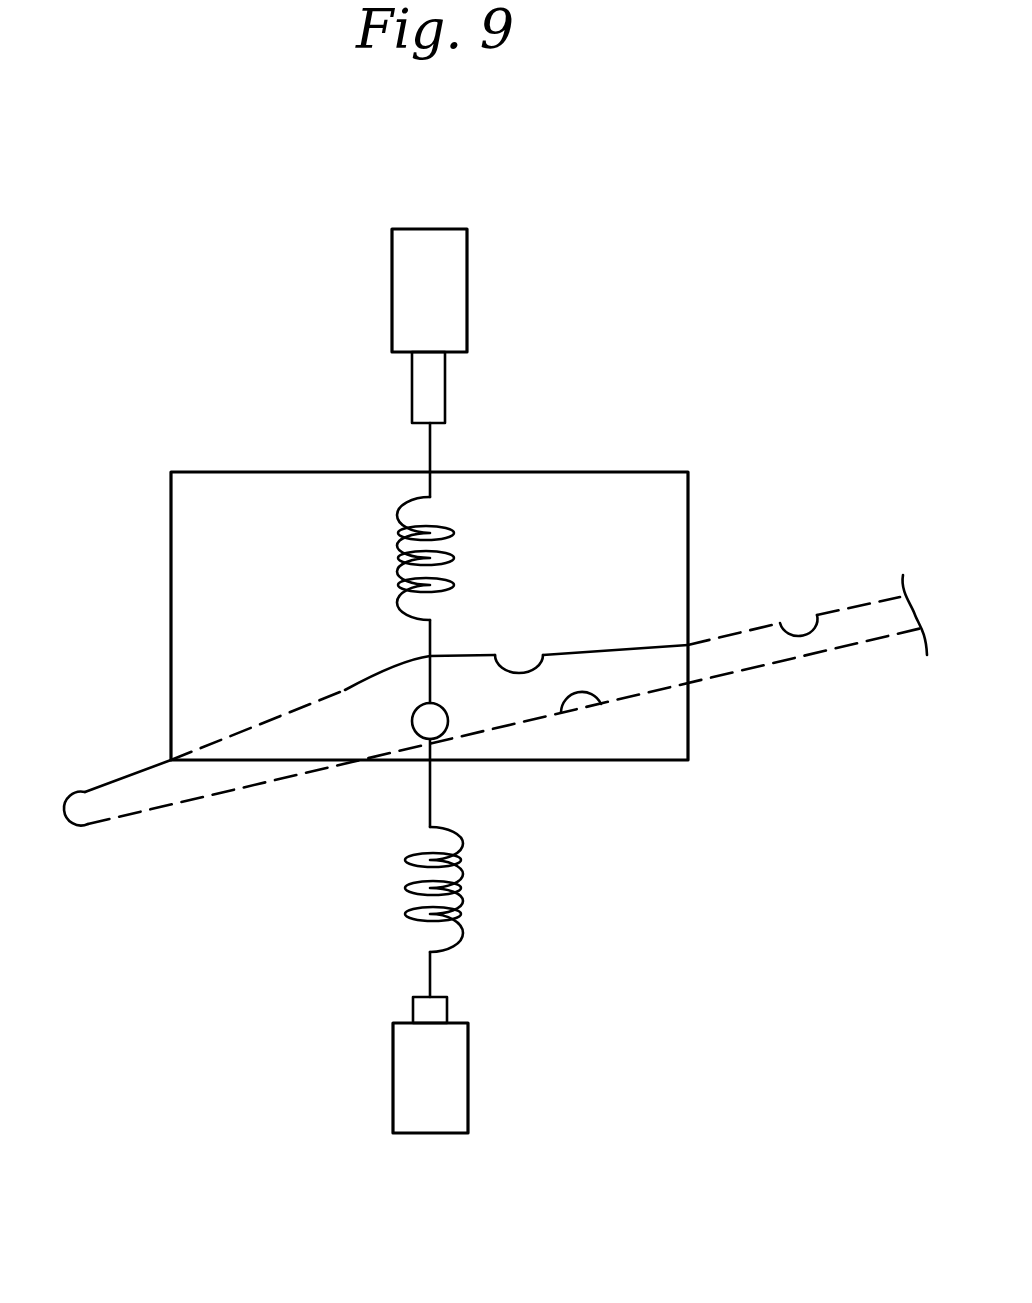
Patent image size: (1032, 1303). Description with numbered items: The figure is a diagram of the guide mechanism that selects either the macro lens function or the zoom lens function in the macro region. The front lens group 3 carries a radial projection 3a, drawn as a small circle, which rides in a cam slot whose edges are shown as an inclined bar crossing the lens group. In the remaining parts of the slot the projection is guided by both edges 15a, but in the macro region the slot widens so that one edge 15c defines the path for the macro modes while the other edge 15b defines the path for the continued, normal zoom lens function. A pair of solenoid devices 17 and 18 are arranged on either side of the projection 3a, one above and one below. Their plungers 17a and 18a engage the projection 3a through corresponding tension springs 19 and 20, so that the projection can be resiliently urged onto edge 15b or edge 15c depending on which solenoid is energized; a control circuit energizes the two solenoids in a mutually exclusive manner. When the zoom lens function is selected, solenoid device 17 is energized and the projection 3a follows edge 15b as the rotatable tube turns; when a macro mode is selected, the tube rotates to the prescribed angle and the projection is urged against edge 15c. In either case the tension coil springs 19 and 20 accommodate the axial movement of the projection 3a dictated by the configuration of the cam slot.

The front lens group 3 is at (600, 472).
The radial projection 3a is at (414, 708).
The edges of the cam slot 15a is at (808, 653).
The edge of the cam slot 15b is at (601, 704).
The edge of the cam slot 15c is at (544, 653).
The solenoid device 17 is at (468, 1095).
The plunger 17a is at (447, 1005).
The solenoid device 18 is at (467, 305).
The plunger 18a is at (445, 393).
The tension spring 19 is at (462, 873).
The tension spring 20 is at (453, 560).